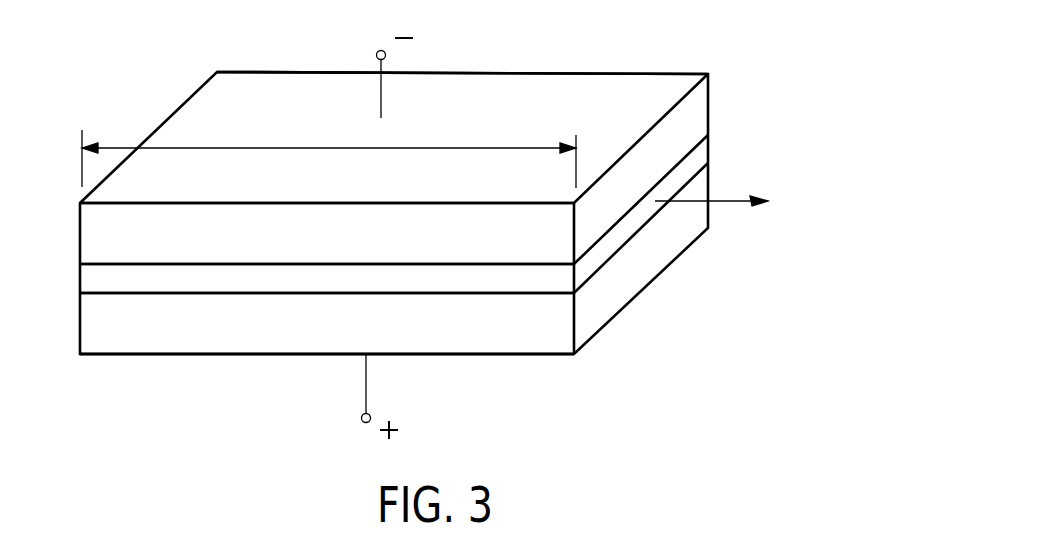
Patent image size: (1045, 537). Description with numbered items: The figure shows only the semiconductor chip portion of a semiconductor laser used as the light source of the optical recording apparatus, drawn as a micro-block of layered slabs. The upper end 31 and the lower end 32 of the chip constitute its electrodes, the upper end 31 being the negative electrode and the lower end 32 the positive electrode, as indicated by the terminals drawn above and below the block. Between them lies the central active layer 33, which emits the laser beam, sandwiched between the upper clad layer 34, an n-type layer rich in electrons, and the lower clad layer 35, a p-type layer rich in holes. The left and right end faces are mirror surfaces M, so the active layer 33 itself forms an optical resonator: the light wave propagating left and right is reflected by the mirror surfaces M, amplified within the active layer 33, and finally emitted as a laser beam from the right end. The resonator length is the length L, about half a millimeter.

The upper end 31 is at (551, 83).
The lower end 32 is at (449, 356).
The active layer 33 is at (78, 279).
The upper clad layer 34 is at (78, 231).
The lower clad layer 35 is at (78, 330).
The mirror surfaces M is at (180, 105).
The length L is at (329, 153).